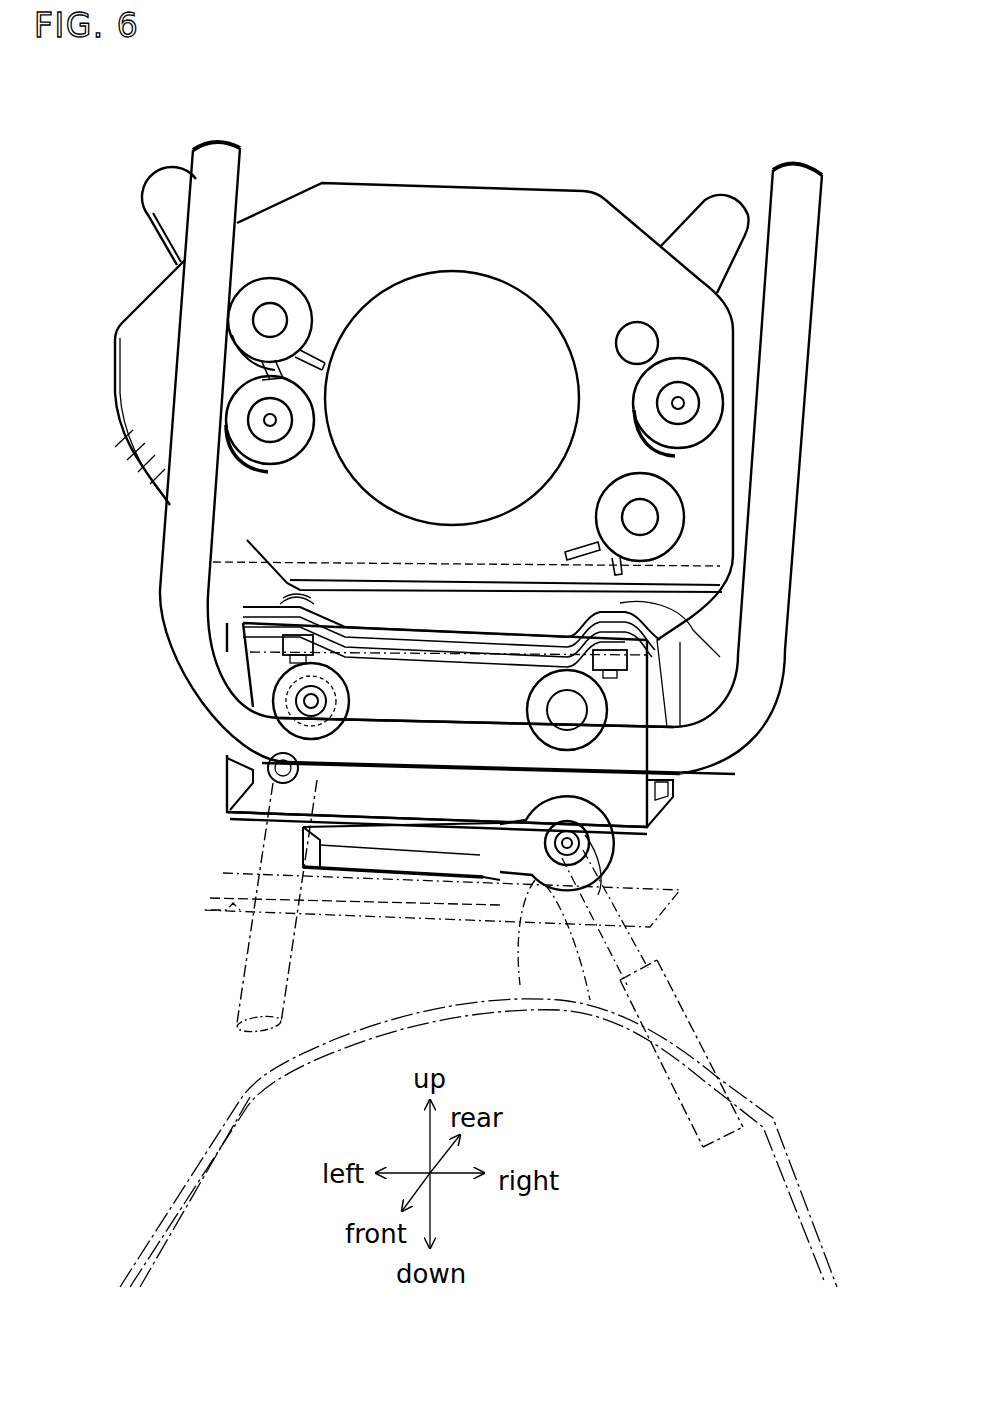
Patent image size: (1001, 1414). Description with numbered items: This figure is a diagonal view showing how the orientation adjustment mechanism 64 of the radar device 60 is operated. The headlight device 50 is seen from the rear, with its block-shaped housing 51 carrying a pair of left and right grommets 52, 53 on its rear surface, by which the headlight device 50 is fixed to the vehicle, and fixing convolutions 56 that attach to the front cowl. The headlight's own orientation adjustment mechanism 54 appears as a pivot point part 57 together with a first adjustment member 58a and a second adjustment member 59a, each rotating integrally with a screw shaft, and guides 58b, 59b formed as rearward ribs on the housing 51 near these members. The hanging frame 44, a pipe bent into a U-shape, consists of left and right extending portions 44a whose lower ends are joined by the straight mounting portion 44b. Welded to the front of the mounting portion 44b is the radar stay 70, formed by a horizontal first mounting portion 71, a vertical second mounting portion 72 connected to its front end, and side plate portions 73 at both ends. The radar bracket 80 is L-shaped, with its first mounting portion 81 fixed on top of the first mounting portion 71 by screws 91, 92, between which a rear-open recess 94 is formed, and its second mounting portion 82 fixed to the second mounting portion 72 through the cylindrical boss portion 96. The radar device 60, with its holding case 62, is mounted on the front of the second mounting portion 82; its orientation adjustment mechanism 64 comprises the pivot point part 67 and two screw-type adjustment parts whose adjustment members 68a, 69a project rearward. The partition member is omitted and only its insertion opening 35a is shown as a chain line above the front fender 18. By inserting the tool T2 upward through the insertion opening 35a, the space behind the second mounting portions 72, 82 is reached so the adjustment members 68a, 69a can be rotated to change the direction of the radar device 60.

The front fender 18 is at (812, 1210).
The insertion opening 35a is at (235, 905).
The hanging frame 44 is at (830, 197).
The extending portions 44a is at (228, 185).
The mounting portion 44b is at (660, 743).
The headlight device 50 is at (465, 172).
The housing 51 is at (497, 205).
The grommet 52 is at (225, 418).
The grommet 53 is at (700, 395).
The orientation adjustment mechanism 54 is at (577, 288).
The fixing convolutions 56 is at (168, 185).
The pivot point part 57 is at (640, 348).
The first adjustment member 58a is at (243, 322).
The guide 58b is at (260, 377).
The second adjustment member 59a is at (670, 500).
The guide 59b is at (690, 572).
The radar device 60 is at (393, 878).
The holding case 62 is at (363, 862).
The orientation adjustment mechanism 64 is at (467, 795).
The pivot point part 67 is at (678, 796).
The adjustment member 68a is at (285, 677).
The adjustment member 69a is at (590, 872).
The radar stay 70 is at (205, 802).
The first mounting portion 71 is at (275, 645).
The second mounting portion 72 is at (412, 803).
The side plate portion 73 is at (235, 772).
The radar bracket 80 is at (575, 903).
The first mounting portion 81 is at (255, 605).
The second mounting portion 82 is at (547, 880).
The screw 91 is at (215, 562).
The screw 92 is at (700, 620).
The recess 94 is at (395, 605).
The boss portion 96 is at (263, 800).
The tool T2 is at (245, 967).